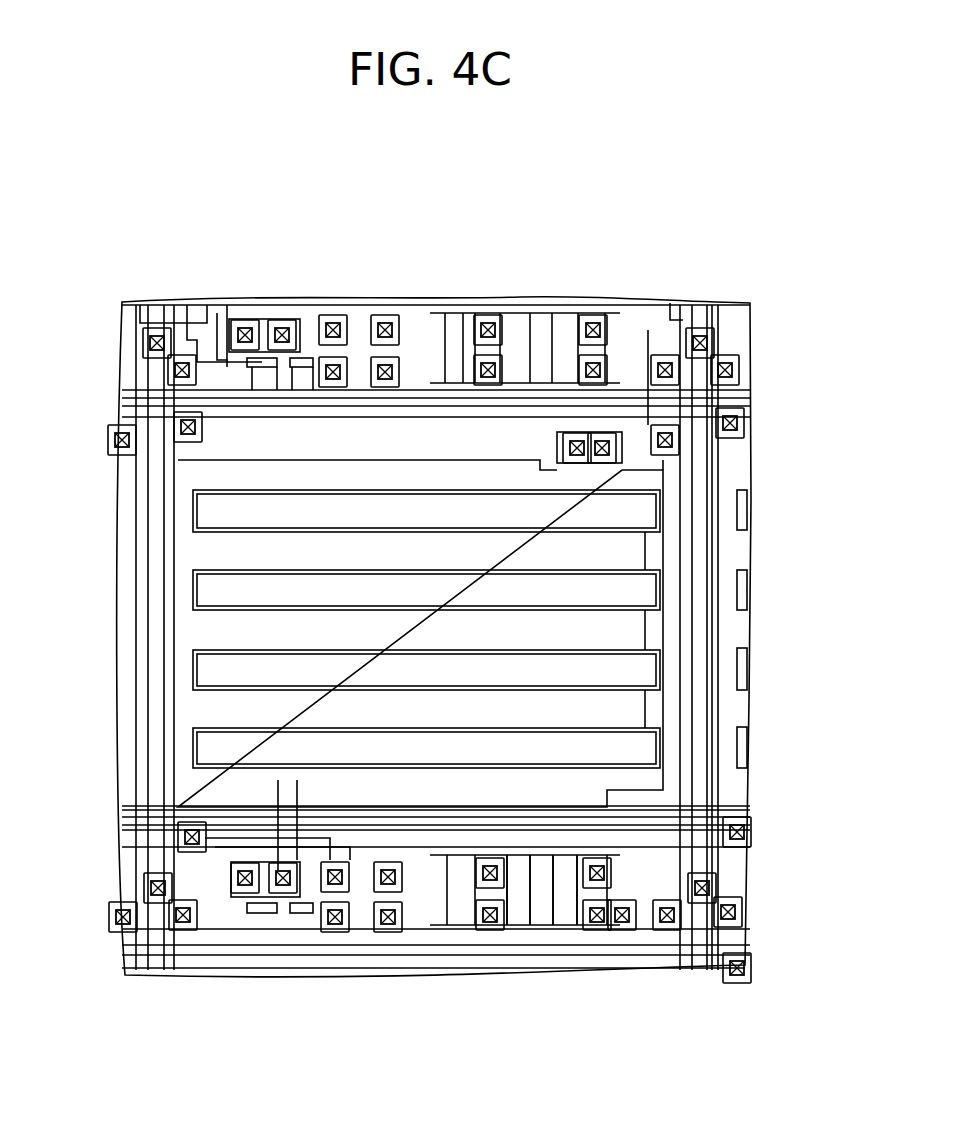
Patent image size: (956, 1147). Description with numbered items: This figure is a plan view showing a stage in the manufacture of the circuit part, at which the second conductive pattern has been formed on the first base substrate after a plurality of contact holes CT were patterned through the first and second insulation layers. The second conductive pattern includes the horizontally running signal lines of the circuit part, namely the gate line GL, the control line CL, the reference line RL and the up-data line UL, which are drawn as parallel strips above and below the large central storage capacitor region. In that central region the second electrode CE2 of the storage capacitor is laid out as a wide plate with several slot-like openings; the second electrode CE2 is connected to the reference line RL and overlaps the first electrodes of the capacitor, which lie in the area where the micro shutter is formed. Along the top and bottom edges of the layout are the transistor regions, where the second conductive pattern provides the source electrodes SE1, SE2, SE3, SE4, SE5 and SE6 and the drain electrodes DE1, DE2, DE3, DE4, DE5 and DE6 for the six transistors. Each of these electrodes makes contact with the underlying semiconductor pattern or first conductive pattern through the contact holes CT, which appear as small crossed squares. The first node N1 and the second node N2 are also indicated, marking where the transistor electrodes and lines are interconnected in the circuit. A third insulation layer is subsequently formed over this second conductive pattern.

The second electrode CE2 is at (177, 667).
The contact hole CT is at (192, 828).
The gate line GL is at (128, 821).
The control line CL is at (128, 847).
The reference line RL is at (125, 940).
The up-data line UL is at (128, 968).
The first node N1 is at (622, 446).
The second node N2 is at (600, 895).
The fifth drain electrode DE5 is at (612, 863).
The first source electrode SE1 is at (183, 930).
The first drain electrode DE1 is at (243, 893).
The second source electrode SE2 is at (283, 893).
The second drain electrode DE2 is at (335, 932).
The fourth drain electrode DE4 is at (388, 892).
The third source electrode SE3 is at (393, 932).
The fourth source electrode SE4 is at (475, 887).
The third drain electrode DE3 is at (480, 931).
The sixth source electrode SE6 is at (500, 931).
The fifth source electrode SE5 is at (508, 887).
The sixth drain electrode DE6 is at (617, 931).